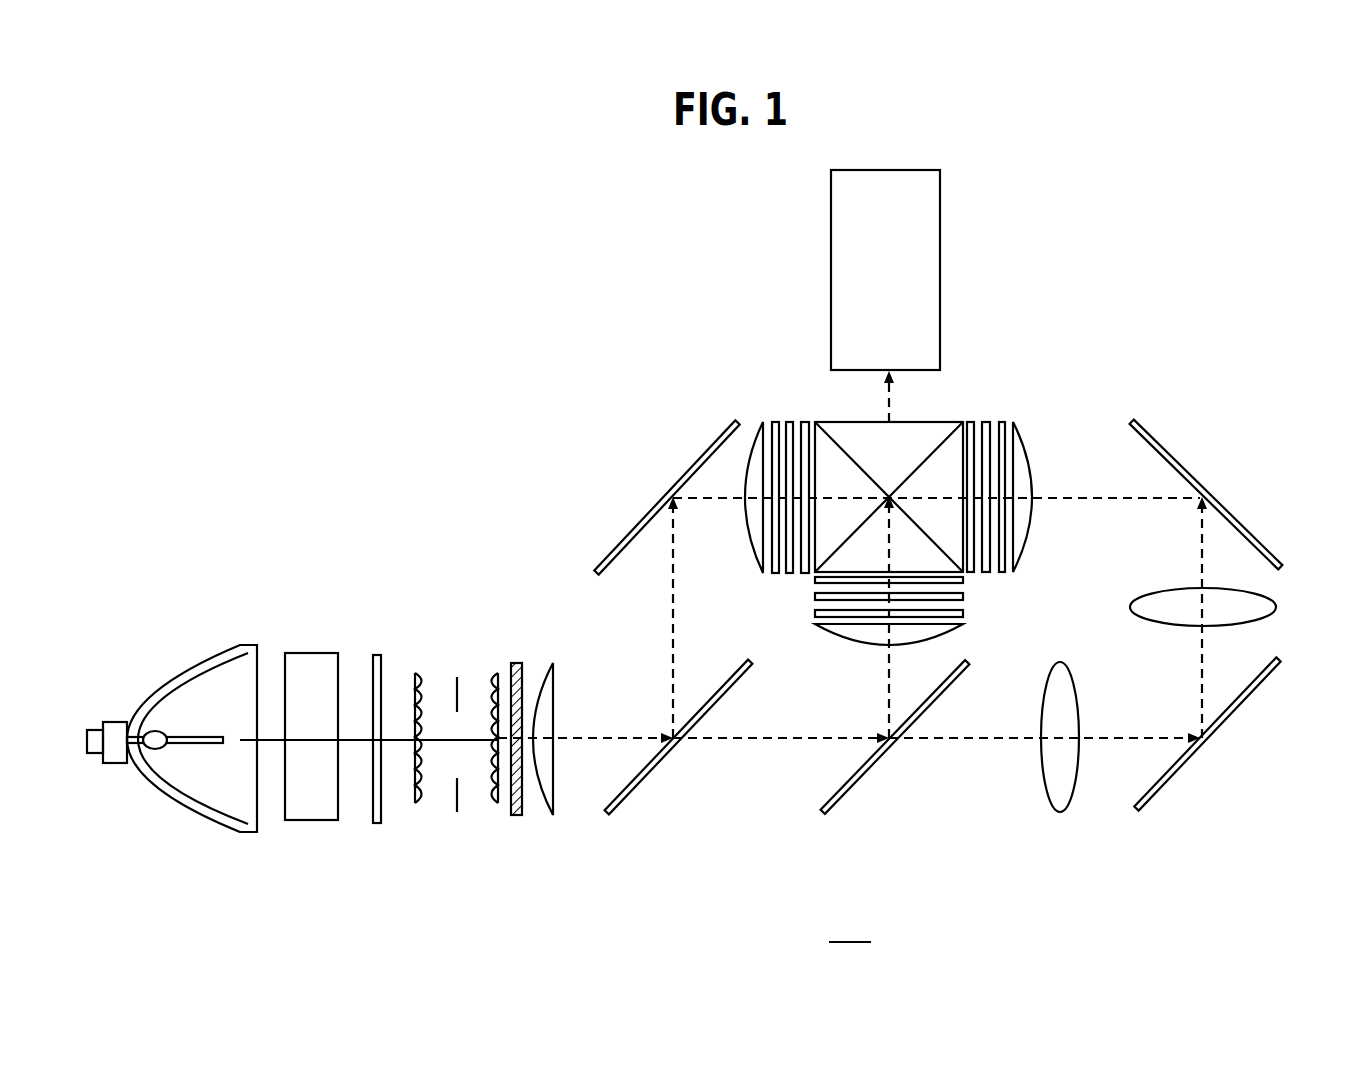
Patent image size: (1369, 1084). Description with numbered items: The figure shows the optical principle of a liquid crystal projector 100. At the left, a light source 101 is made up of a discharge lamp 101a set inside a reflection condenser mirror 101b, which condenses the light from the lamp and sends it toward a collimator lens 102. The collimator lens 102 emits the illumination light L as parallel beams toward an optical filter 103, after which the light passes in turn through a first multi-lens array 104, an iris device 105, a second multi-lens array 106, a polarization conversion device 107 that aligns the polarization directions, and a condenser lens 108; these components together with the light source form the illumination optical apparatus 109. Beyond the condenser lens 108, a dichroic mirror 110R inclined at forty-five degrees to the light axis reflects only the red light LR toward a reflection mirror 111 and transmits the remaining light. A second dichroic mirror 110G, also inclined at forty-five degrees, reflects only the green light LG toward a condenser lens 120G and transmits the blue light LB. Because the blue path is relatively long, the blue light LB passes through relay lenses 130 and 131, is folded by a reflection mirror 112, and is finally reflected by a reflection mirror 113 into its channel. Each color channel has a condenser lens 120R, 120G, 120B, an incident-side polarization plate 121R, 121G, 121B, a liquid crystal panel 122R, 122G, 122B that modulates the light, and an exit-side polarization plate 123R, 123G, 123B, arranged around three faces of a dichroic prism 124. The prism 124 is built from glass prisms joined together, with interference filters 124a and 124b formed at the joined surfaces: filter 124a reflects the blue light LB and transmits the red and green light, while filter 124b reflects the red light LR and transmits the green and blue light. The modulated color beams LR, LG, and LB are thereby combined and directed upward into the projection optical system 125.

The liquid crystal projector 100 is at (850, 930).
The light source 101 is at (170, 682).
The discharge lamp 101a is at (155, 752).
The reflection condenser mirror 101b is at (140, 712).
The collimator lens 102 is at (305, 653).
The optical filter 103 is at (378, 825).
The first multi-lens array 104 is at (423, 673).
The iris device 105 is at (456, 830).
The second multi-lens array 106 is at (490, 673).
The polarization conversion device 107 is at (517, 663).
The condenser lens 108 is at (548, 668).
The illumination optical apparatus 109 is at (319, 875).
The dichroic mirror 110R is at (650, 773).
The dichroic mirror 110G is at (870, 768).
The reflection mirror 111 is at (659, 505).
The reflection mirror 112 is at (1183, 772).
The reflection mirror 113 is at (1245, 525).
The condenser lens 120R is at (756, 576).
The polarization plate 121R is at (775, 576).
The liquid crystal panel 122R is at (789, 576).
The polarization plate 123R is at (805, 576).
The condenser lens 120G is at (965, 638).
The polarization plate 121G is at (965, 614).
The liquid crystal panel 122G is at (965, 597).
The polarization plate 123G is at (965, 580).
The condenser lens 120B is at (1020, 422).
The polarization plate 121B is at (1002, 422).
The liquid crystal panel 122B is at (986, 422).
The polarization plate 123B is at (970, 422).
The dichroic prism 124 is at (851, 432).
The interference filter 124a is at (835, 432).
The interference filter 124b is at (850, 540).
The projection optical system 125 is at (940, 223).
The relay lens 130 is at (1045, 758).
The relay lens 131 is at (1276, 607).
The illumination light L is at (270, 743).
The red light LR is at (673, 560).
The green light LG is at (893, 660).
The blue light LB is at (1127, 730).